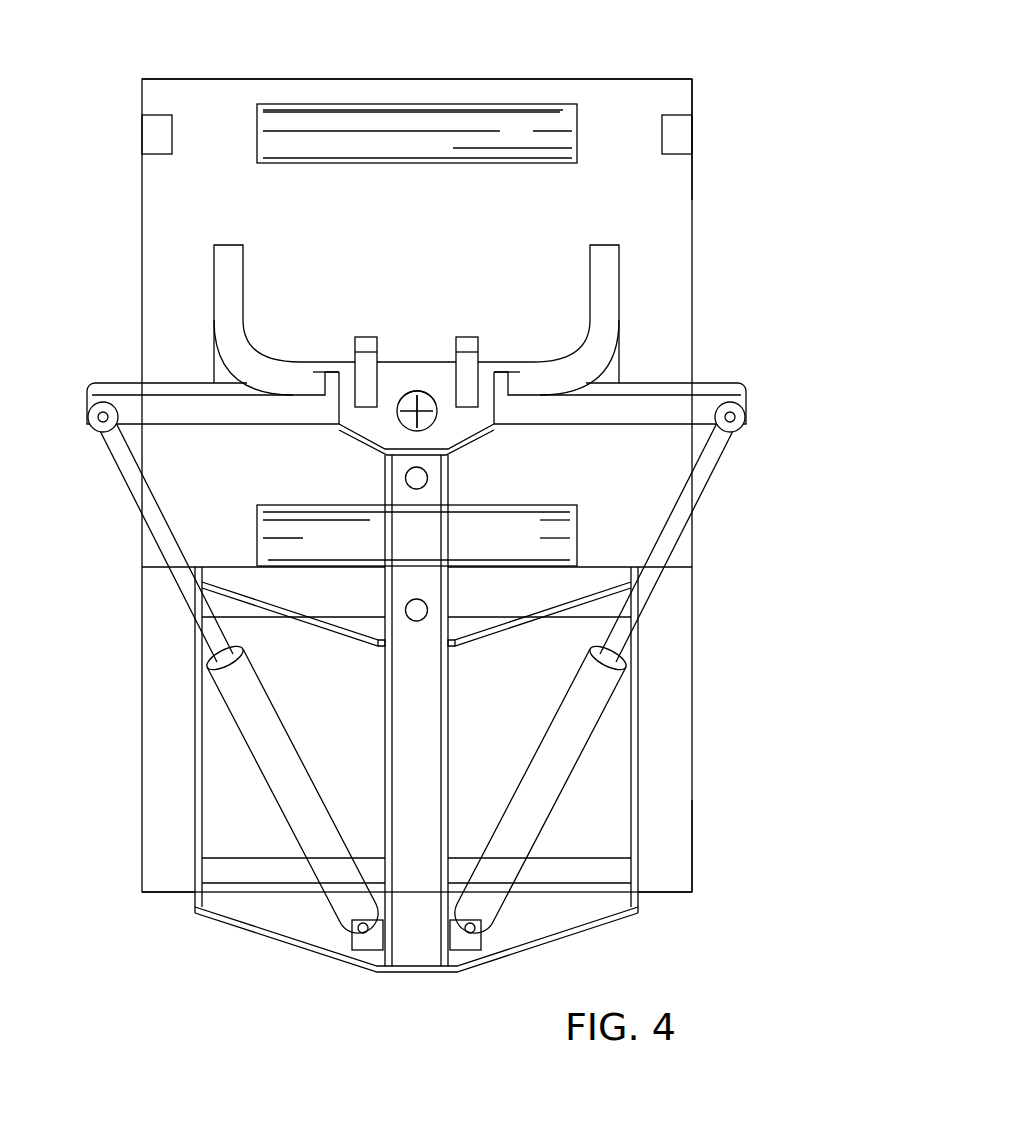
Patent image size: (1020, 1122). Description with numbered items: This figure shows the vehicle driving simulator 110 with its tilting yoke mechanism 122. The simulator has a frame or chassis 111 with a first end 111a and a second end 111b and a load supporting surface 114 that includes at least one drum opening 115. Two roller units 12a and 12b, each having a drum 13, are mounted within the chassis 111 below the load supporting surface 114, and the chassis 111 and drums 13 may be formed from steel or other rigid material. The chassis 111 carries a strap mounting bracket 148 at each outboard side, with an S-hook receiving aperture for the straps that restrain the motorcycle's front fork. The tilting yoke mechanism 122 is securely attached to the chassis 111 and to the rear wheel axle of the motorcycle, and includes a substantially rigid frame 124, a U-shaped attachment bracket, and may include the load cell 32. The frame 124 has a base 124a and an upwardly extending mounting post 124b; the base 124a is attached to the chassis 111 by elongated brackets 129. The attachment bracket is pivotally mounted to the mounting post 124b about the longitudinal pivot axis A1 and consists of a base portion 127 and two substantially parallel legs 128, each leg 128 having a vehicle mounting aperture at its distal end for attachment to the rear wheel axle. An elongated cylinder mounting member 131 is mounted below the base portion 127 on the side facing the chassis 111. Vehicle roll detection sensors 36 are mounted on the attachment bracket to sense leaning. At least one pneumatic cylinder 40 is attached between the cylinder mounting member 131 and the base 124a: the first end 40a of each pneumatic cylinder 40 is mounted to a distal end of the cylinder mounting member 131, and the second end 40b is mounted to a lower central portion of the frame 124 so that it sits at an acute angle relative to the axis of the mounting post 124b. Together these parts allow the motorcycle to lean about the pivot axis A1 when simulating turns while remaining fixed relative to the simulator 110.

The vehicle driving simulator 110 is at (78, 234).
The frame or chassis 111 is at (134, 94).
The first end 111a is at (693, 92).
The second end 111b is at (693, 878).
The load supporting surface 114 is at (433, 210).
The strap mounting bracket 148 is at (152, 148).
The roller unit 12a is at (570, 86).
The roller unit 12b is at (590, 533).
The drum 13 is at (488, 122).
The drum opening 115 is at (333, 114).
The leg 128 is at (218, 293).
The tilting yoke mechanism 122 is at (90, 342).
The cylinder mounting member 131 is at (678, 405).
The first end 40a is at (124, 480).
The vehicle roll detection sensor 36 is at (356, 365).
The base portion 127 is at (393, 365).
The load cell 32 is at (428, 420).
The longitudinal pivot axis A1 is at (420, 382).
The elongated bracket 129 is at (145, 603).
The frame 124 is at (132, 637).
The mounting post 124b is at (430, 713).
The base 124a is at (268, 916).
The pneumatic cylinder 40 is at (222, 728).
The second end 40b is at (323, 897).